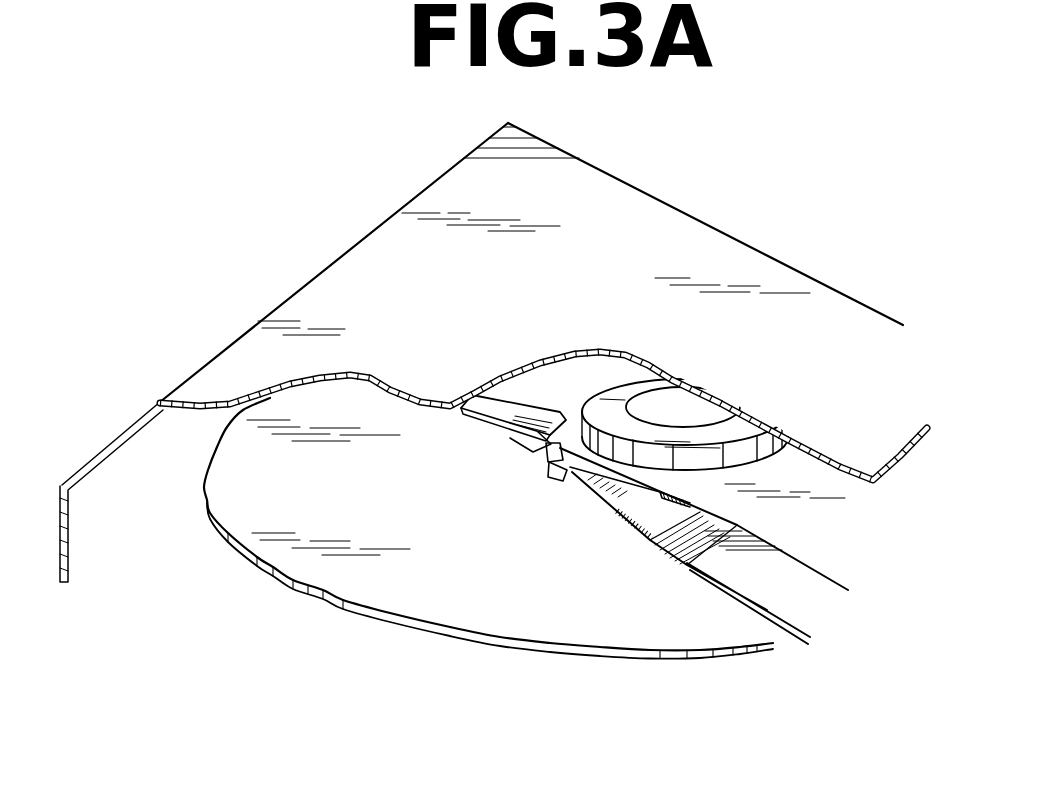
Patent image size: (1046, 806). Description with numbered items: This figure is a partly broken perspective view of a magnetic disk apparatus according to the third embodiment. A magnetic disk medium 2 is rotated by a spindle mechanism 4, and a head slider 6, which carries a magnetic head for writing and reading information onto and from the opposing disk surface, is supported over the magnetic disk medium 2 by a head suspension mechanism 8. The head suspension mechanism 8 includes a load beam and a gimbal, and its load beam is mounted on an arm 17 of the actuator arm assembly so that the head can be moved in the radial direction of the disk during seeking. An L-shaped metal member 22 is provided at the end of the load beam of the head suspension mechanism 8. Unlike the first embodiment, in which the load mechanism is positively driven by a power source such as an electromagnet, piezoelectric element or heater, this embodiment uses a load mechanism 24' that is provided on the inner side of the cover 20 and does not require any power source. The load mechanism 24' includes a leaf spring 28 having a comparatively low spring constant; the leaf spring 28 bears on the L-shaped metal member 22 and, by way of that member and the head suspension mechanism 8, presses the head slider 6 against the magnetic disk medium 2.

The magnetic disk medium 2 is at (320, 570).
The spindle mechanism 4 is at (713, 437).
The head slider 6 is at (547, 480).
The head suspension mechanism 8 is at (663, 528).
The arm 17 is at (800, 588).
The cover 20 is at (657, 200).
The L-shaped metal member 22 is at (550, 445).
The load mechanism 24' is at (543, 372).
The leaf spring 28 is at (513, 445).